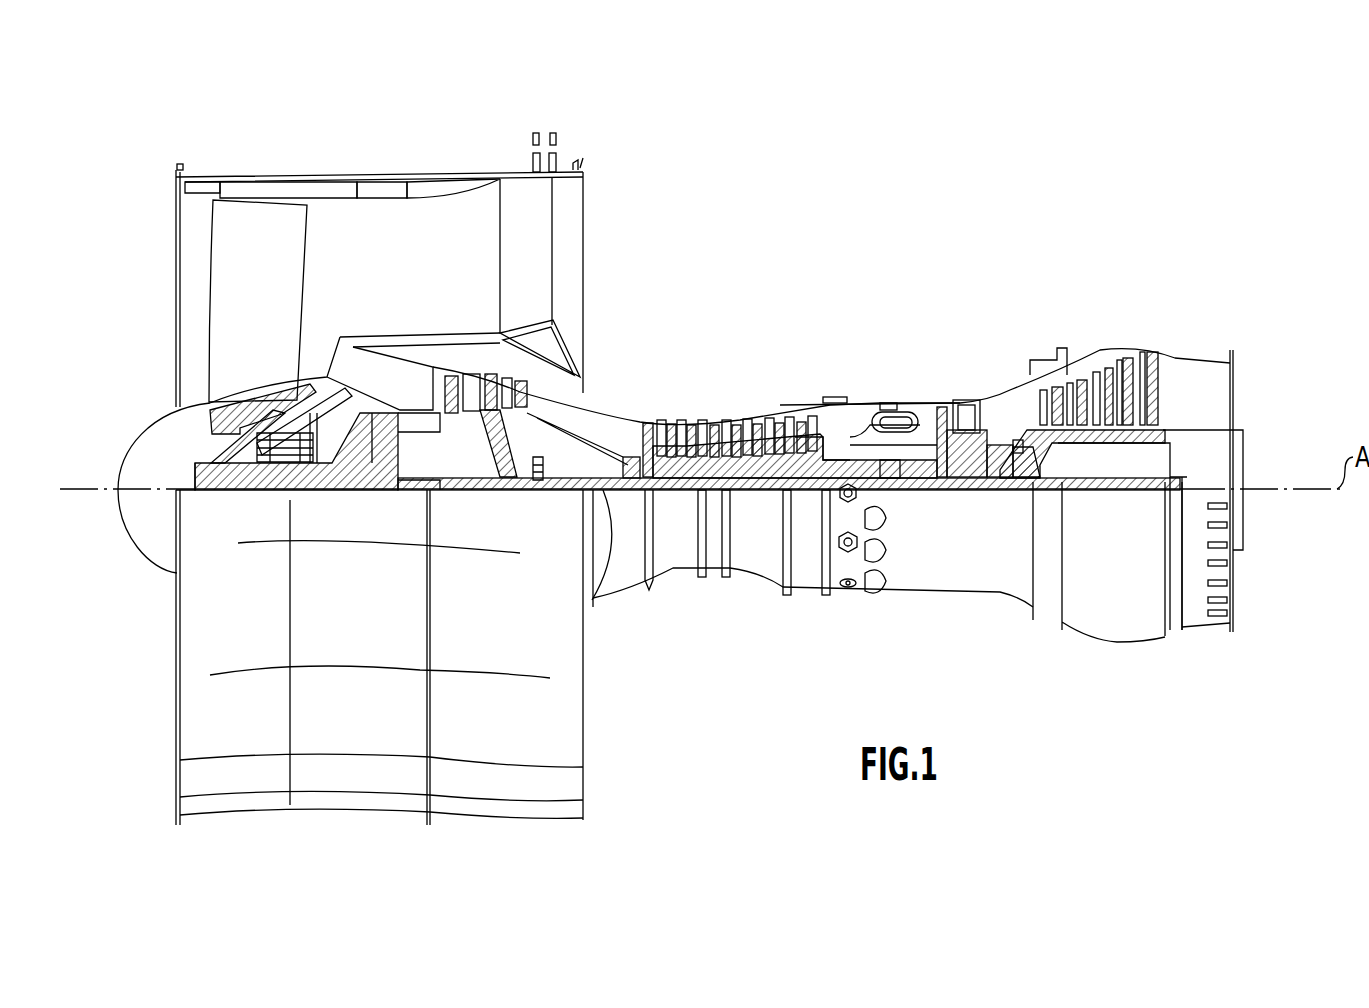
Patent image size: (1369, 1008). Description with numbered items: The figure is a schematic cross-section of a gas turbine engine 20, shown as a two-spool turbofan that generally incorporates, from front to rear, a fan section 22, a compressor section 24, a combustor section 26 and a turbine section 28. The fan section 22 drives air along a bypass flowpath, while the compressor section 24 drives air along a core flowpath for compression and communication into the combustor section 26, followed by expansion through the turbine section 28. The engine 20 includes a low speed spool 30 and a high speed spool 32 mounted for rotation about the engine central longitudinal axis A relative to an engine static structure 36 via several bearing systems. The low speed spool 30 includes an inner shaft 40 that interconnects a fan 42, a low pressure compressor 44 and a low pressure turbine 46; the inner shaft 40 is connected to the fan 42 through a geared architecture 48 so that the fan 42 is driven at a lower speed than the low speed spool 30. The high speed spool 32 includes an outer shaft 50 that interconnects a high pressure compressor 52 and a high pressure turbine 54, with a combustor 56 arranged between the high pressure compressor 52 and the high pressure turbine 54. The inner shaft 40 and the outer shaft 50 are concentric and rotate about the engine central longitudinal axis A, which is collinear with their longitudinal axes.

The gas turbine engine 20 is at (912, 218).
The fan section 22 is at (300, 160).
The compressor section 24 is at (640, 383).
The combustor section 26 is at (887, 362).
The turbine section 28 is at (1056, 330).
The low speed spool 30 is at (760, 505).
The high speed spool 32 is at (807, 453).
The engine static structure 36 is at (806, 602).
The inner shaft 40 is at (601, 490).
The fan 42 is at (268, 316).
The low pressure compressor 44 is at (508, 380).
The low pressure turbine 46 is at (1102, 370).
The geared architecture 48 is at (387, 473).
The outer shaft 50 is at (890, 470).
The high pressure compressor 52 is at (730, 453).
The high pressure turbine 54 is at (963, 400).
The combustor 56 is at (890, 427).